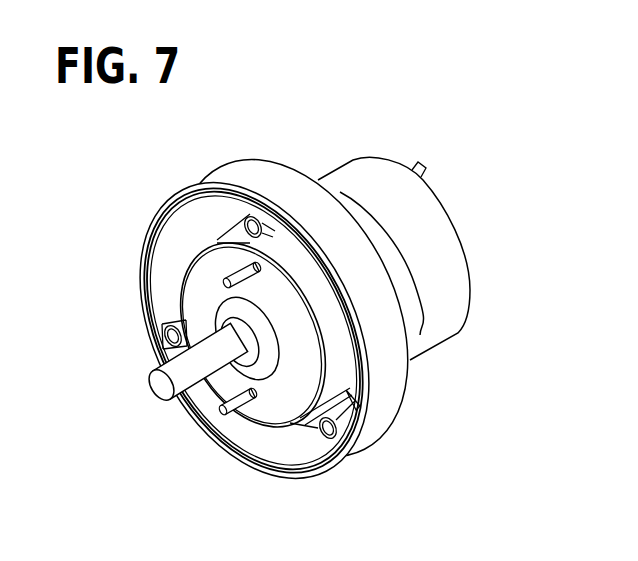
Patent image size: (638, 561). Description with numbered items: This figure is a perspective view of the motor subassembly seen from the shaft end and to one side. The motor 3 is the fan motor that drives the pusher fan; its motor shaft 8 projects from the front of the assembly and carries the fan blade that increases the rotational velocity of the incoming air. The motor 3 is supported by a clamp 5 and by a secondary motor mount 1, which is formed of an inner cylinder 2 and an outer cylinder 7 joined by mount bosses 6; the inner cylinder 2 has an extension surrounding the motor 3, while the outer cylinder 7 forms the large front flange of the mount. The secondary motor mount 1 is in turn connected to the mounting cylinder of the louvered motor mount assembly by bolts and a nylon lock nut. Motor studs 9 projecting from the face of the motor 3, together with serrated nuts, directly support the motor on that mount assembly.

The secondary motor mount 1 is at (178, 214).
The inner cylinder 2 is at (175, 282).
The motor 3 is at (359, 167).
The clamp 5 is at (415, 323).
The mount bosses 6 is at (328, 443).
The outer cylinder 7 is at (246, 170).
The motor shaft 8 is at (160, 381).
The motor studs 9 is at (223, 415).